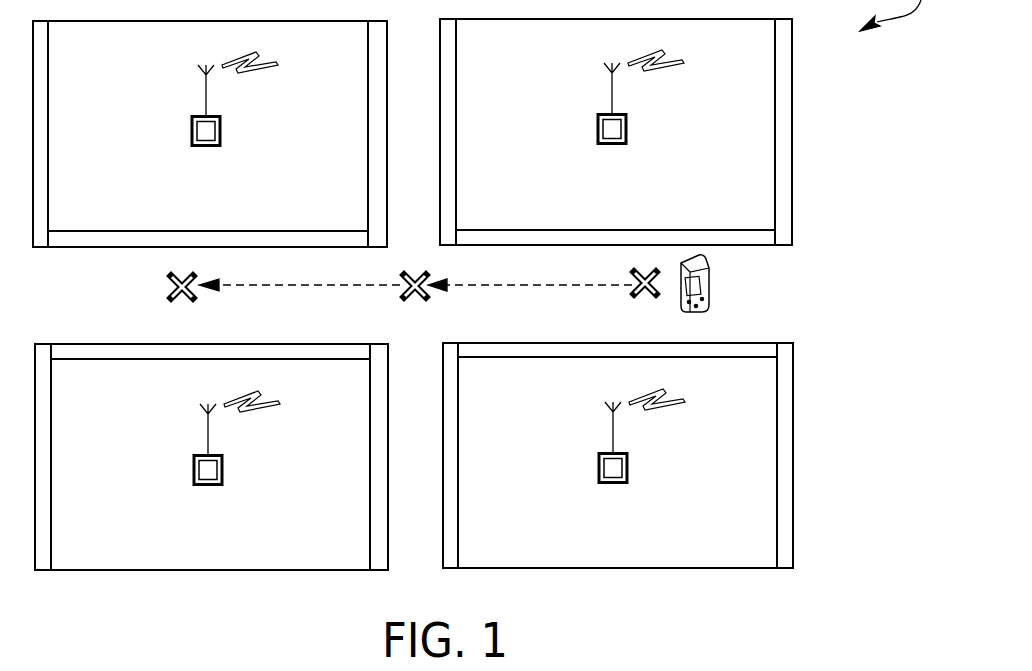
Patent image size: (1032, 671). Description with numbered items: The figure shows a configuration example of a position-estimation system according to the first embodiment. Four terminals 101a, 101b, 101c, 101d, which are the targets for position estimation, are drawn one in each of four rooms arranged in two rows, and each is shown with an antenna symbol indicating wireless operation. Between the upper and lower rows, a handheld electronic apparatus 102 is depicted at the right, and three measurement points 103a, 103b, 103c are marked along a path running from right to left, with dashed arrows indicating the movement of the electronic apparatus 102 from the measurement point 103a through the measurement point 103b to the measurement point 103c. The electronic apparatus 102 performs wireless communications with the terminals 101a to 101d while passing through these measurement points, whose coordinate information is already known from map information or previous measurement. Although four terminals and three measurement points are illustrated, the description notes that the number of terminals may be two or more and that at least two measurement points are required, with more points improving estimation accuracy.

The terminal 101a is at (206, 147).
The terminal 101b is at (612, 145).
The terminal 101c is at (208, 486).
The terminal 101d is at (613, 484).
The electronic apparatus 102 is at (710, 290).
The measurement point 103a is at (645, 296).
The measurement point 103b is at (415, 299).
The measurement point 103c is at (182, 300).